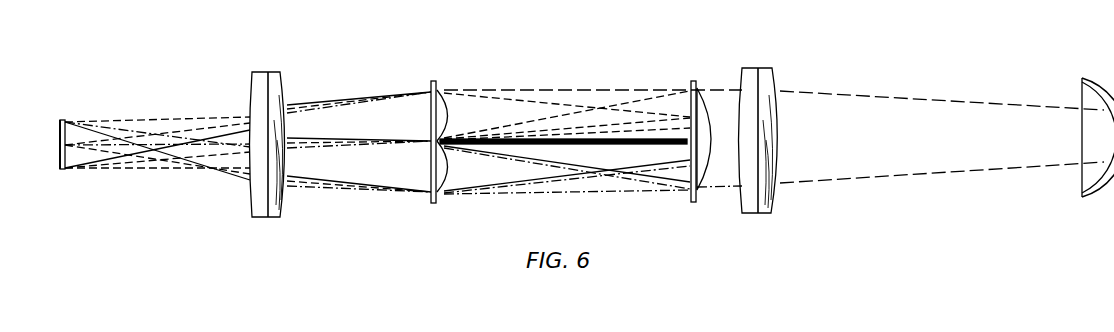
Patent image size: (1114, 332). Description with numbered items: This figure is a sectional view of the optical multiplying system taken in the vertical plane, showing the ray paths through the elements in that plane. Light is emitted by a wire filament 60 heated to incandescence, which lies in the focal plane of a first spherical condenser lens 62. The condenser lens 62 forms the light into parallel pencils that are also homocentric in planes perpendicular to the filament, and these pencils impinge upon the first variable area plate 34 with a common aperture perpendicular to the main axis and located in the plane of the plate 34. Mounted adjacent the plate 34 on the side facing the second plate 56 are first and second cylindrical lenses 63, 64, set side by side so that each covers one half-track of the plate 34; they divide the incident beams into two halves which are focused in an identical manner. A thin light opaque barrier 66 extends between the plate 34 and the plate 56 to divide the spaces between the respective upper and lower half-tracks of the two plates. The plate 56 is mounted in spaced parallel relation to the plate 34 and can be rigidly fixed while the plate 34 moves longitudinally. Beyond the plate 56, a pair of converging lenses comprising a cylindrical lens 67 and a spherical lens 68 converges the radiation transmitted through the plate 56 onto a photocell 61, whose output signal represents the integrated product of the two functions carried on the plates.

The wire filament 60 is at (60, 128).
The first spherical lens 62 is at (277, 72).
The plate 34 is at (431, 88).
The first cylindrical lens 63 is at (444, 90).
The second cylindrical lens 64 is at (448, 190).
The light opaque barrier 66 is at (609, 139).
The plate 56 is at (690, 80).
The cylindrical lens 67 is at (700, 91).
The spherical lens 68 is at (765, 68).
The photocell 61 is at (1095, 80).